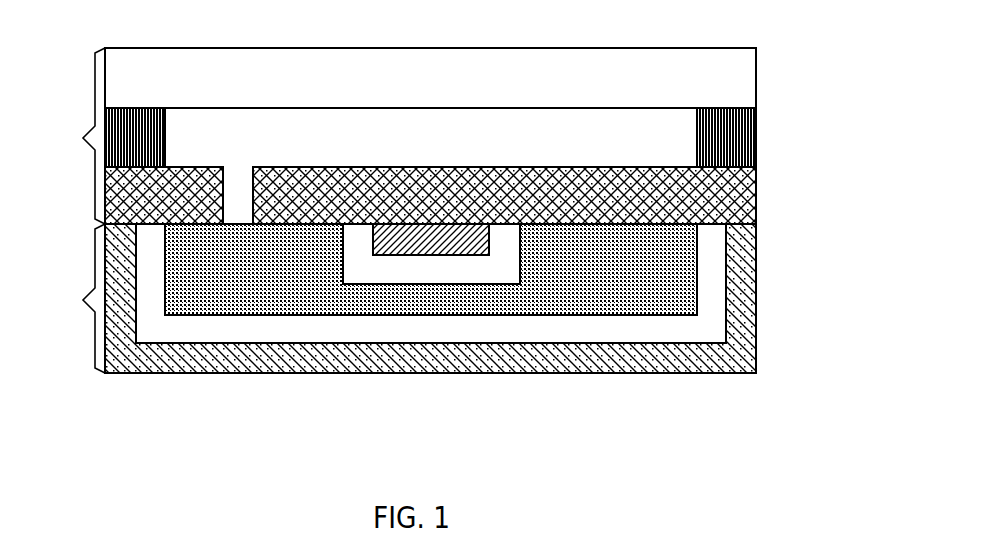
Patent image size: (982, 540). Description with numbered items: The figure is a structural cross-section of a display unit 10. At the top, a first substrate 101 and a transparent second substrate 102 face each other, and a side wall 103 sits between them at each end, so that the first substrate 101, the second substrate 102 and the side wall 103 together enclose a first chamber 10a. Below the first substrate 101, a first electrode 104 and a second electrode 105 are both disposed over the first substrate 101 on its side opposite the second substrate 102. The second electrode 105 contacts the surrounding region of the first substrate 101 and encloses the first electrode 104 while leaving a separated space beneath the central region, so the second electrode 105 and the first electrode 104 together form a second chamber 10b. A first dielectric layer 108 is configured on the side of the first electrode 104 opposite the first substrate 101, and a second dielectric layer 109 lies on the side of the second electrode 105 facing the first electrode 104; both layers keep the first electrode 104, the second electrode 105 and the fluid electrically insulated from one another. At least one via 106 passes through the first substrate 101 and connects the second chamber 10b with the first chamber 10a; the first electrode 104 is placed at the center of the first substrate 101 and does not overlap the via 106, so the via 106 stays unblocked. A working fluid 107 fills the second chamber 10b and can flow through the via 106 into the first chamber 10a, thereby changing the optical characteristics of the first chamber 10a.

The display unit 10 is at (380, 21).
The first chamber 10a is at (71, 136).
The second chamber 10b is at (71, 298).
The first substrate 101 is at (697, 195).
The second substrate 102 is at (697, 78).
The side wall 103 is at (740, 137).
The first electrode 104 is at (432, 240).
The second electrode 105 is at (726, 358).
The via 106 is at (238, 210).
The working fluid 107 is at (586, 270).
The first dielectric layer 108 is at (496, 269).
The second dielectric layer 109 is at (710, 314).